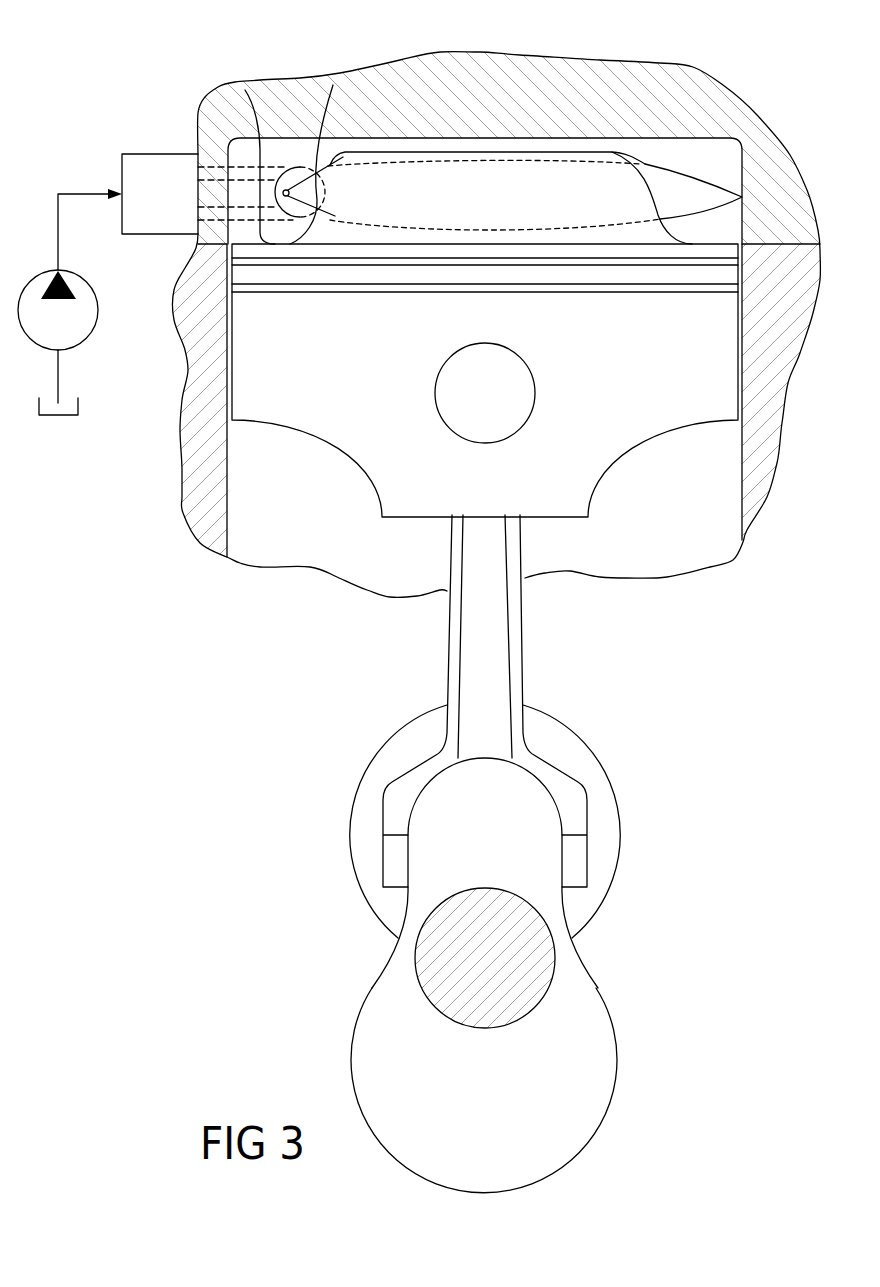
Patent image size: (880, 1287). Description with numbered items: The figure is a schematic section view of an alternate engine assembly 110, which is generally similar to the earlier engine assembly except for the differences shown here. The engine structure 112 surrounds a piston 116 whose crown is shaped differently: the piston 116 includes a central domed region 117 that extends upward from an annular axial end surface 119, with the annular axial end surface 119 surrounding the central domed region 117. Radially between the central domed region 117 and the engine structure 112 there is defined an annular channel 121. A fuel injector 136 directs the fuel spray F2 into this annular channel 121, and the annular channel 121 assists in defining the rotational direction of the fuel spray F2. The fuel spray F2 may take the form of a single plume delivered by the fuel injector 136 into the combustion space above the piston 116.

The engine assembly 110 is at (795, 108).
The engine structure 112 is at (190, 112).
The piston 116 is at (738, 404).
The central domed region 117 is at (517, 152).
The annular axial end surface 119 is at (245, 90).
The annular channel 121 is at (698, 190).
The fuel injector 136 is at (161, 154).
The fuel spray F2 is at (333, 85).